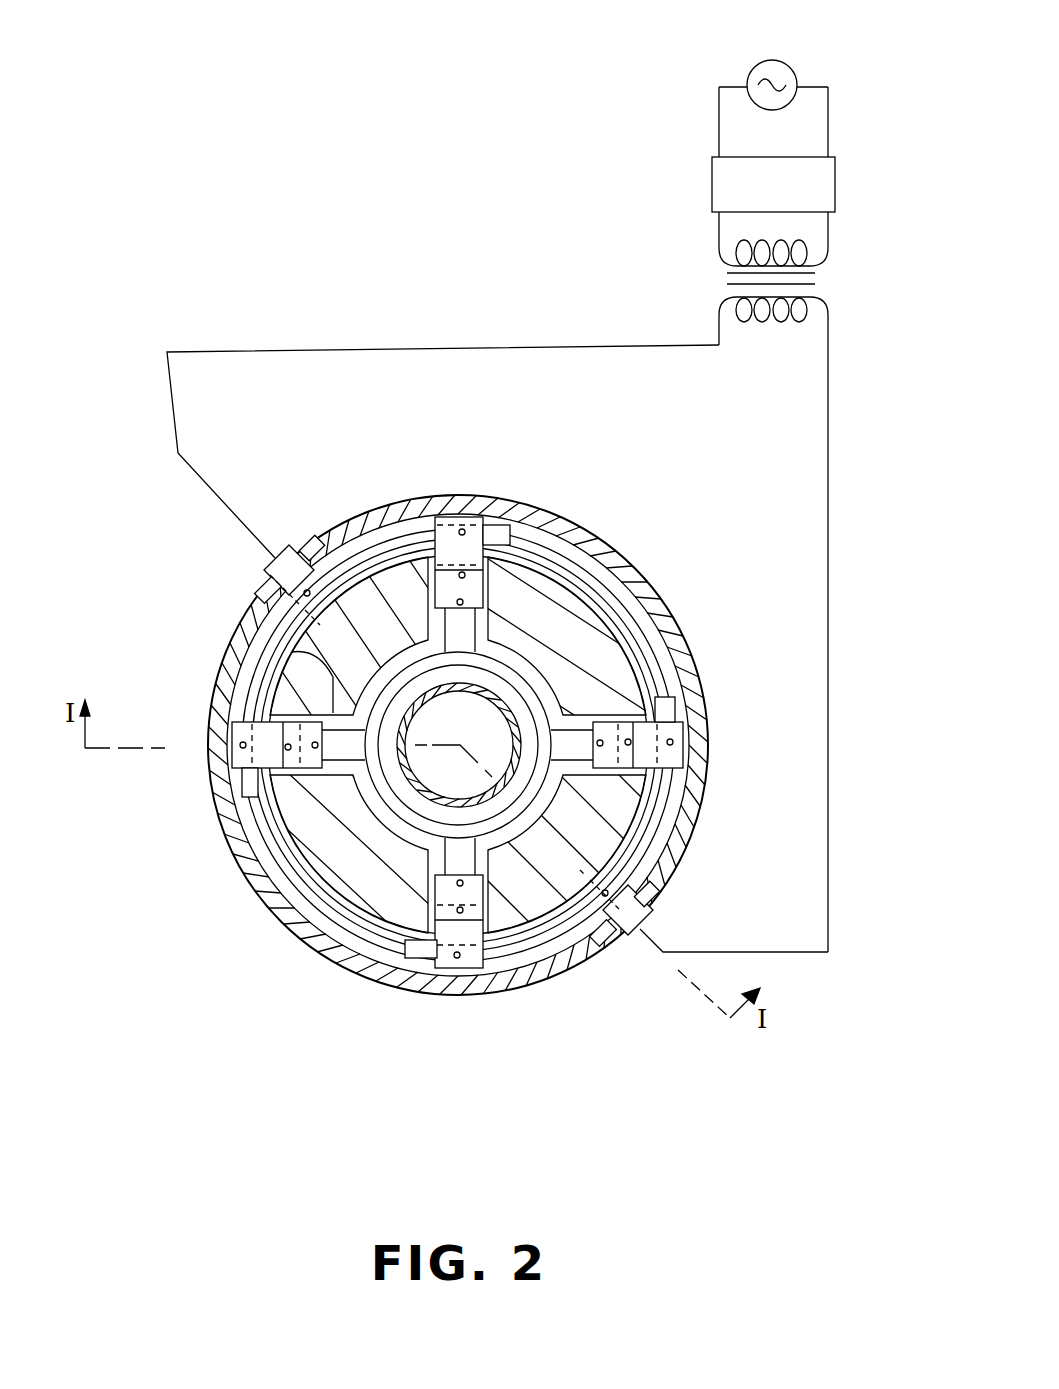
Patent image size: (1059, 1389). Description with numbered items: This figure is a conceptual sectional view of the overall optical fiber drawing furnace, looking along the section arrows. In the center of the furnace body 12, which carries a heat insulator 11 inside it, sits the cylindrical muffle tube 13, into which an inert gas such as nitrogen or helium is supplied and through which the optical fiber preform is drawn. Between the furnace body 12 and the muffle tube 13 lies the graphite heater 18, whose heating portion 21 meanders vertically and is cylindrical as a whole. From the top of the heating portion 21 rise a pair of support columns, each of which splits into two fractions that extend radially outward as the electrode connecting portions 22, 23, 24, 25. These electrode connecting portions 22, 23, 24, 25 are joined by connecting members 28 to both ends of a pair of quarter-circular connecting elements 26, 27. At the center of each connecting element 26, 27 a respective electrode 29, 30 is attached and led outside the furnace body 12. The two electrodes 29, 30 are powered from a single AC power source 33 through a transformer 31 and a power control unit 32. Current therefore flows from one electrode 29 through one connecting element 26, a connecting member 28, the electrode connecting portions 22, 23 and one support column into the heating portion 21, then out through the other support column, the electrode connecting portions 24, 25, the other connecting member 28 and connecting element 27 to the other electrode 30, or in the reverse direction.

The heat insulator 11 is at (343, 873).
The furnace body 12 is at (642, 587).
The muffle tube 13 is at (490, 683).
The heater 18 is at (290, 877).
The heating portion 21 is at (578, 735).
The electrode connecting portion 22 is at (652, 723).
The electrode connecting portion 23 is at (457, 858).
The electrode connecting portion 24 is at (292, 653).
The electrode connecting portion 25 is at (407, 565).
The connecting element 26 is at (660, 807).
The connecting element 27 is at (355, 560).
The connecting member 28 is at (470, 553).
The electrode 29 is at (640, 913).
The electrode 30 is at (282, 563).
The transformer 31 is at (838, 278).
The amplifier 32 is at (825, 175).
The AC power source 33 is at (784, 62).